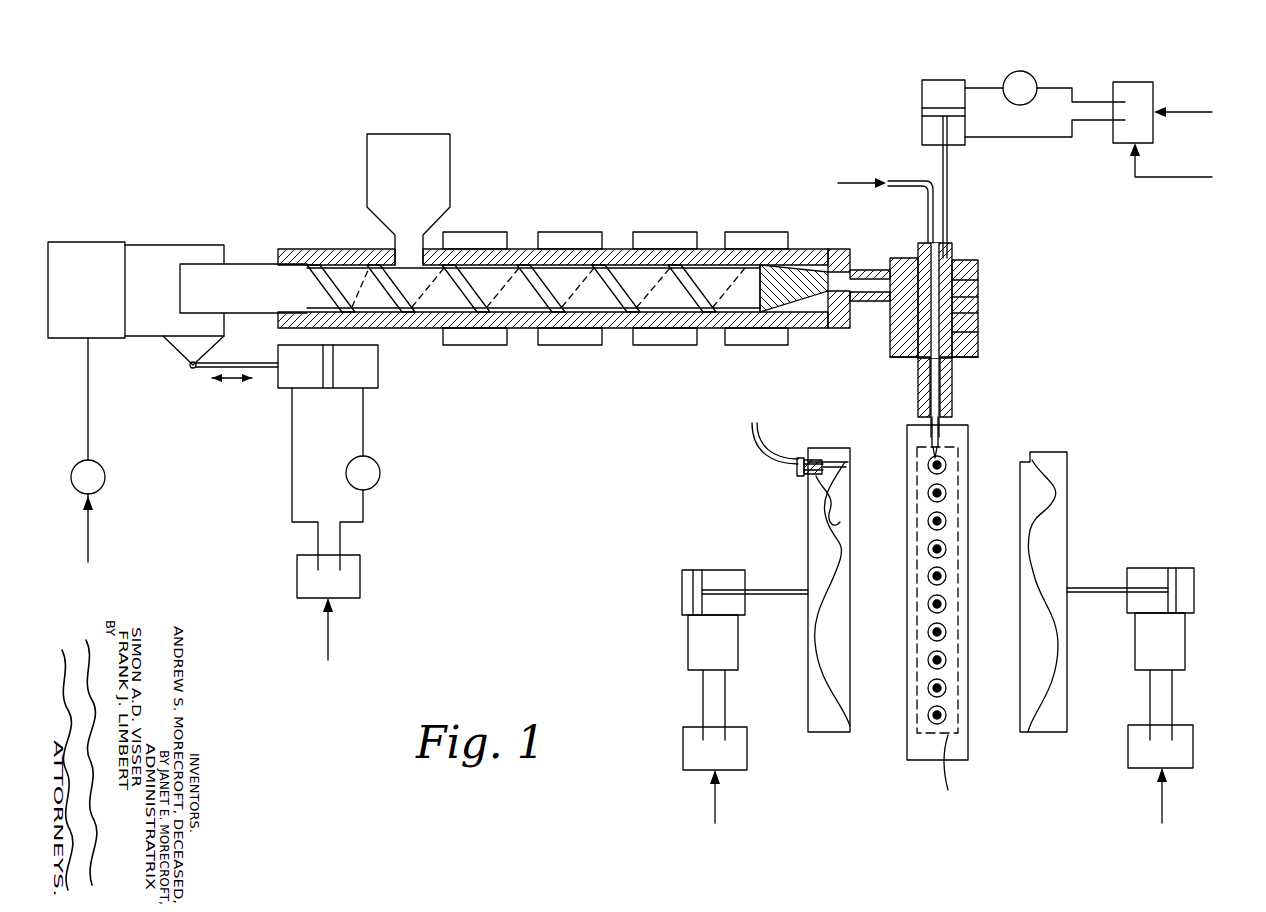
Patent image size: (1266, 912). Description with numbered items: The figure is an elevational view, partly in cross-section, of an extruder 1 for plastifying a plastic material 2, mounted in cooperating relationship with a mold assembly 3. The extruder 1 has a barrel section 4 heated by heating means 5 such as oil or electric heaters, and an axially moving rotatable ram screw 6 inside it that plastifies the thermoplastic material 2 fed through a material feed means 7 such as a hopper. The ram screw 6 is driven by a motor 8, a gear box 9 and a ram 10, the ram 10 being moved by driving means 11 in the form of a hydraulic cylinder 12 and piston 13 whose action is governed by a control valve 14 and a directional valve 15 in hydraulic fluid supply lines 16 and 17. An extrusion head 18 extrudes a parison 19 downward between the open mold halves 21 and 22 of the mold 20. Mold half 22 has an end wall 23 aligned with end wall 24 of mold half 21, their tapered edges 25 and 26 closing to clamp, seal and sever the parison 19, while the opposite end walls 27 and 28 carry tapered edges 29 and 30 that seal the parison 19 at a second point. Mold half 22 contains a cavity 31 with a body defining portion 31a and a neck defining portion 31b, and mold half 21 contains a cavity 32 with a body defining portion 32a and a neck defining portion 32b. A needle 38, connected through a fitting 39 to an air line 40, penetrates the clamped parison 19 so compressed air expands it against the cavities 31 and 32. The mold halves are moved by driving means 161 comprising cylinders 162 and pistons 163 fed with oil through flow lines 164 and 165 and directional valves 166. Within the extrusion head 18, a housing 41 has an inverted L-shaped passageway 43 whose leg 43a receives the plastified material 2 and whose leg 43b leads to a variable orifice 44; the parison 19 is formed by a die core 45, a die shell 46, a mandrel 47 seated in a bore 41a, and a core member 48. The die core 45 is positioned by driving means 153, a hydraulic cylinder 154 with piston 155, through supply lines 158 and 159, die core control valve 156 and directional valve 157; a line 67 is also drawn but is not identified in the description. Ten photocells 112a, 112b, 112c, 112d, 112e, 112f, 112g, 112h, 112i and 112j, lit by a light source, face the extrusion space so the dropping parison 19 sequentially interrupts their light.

The extruder 1 is at (379, 245).
The plastic material 2 is at (808, 262).
The mold assembly 3 is at (902, 766).
The barrel section 4 is at (333, 258).
The heating means 5 is at (640, 232).
The axially moving rotatable ram screw 6 is at (262, 272).
The material feed means 7 is at (404, 144).
The motor 8 is at (158, 252).
The gear box 9 is at (78, 250).
The ram 10 is at (186, 363).
The driving means 11 is at (380, 365).
The hydraulic cylinder 12 is at (345, 386).
The piston 13 is at (262, 380).
The control valve 14 is at (380, 468).
The directional valve 15 is at (362, 573).
The hydraulic fluid supply line 16 is at (363, 510).
The hydraulic fluid supply line 17 is at (292, 510).
The extrusion head 18 is at (862, 256).
The parison 19 is at (955, 396).
The mold 20 is at (1068, 528).
The mold half 21 is at (1055, 556).
The mold half 22 is at (815, 550).
The end wall 23 is at (812, 732).
The end wall 24 is at (1056, 730).
The tapered edge 25 is at (852, 732).
The tapered edge 26 is at (1028, 735).
The end wall 27 is at (826, 448).
The end wall 28 is at (1048, 452).
The tapered edge 29 is at (856, 460).
The tapered edge 30 is at (1010, 452).
The mold cavity 31 is at (822, 512).
The body defining portion 31a is at (848, 634).
The neck defining portion 31b is at (845, 467).
The mold cavity 32 is at (1048, 508).
The body defining portion 32a is at (1040, 652).
The neck defining portion 32b is at (1018, 464).
The needle 38 is at (810, 477).
The fitting 39 is at (797, 470).
The air line 40 is at (752, 455).
The housing 41 is at (982, 276).
The bore 41a is at (956, 254).
The passageway 43 is at (912, 262).
The leg 43a is at (872, 297).
The leg 43b is at (902, 326).
The variable orifice 44 is at (920, 375).
The extrusion die core 45 is at (982, 328).
The die shell 46 is at (982, 348).
The mandrel 47 is at (982, 306).
The core member 48 is at (982, 289).
The oil return line 67 is at (1165, 178).
The photocell 112a is at (946, 468).
The photocell 112b is at (946, 496).
The photocell 112c is at (946, 524).
The photocell 112d is at (946, 552).
The photocell 112e is at (946, 579).
The photocell 112f is at (946, 607).
The photocell 112g is at (946, 635).
The photocell 112h is at (946, 662).
The photocell 112i is at (946, 689).
The photocell 112j is at (946, 716).
The driving means 153 is at (921, 120).
The hydraulic cylinder 154 is at (922, 92).
The piston 155 is at (950, 174).
The die core control valve 156 is at (1030, 74).
The directional valve 157 is at (1148, 82).
The hydraulic fluid supply line 158 is at (1062, 86).
The hydraulic fluid supply line 159 is at (1035, 137).
The driving means 161 is at (680, 576).
The cylinder 162 is at (724, 578).
The piston 163 is at (756, 598).
The flow line 164 is at (688, 655).
The flow line 165 is at (740, 656).
The directional valve 166 is at (683, 736).